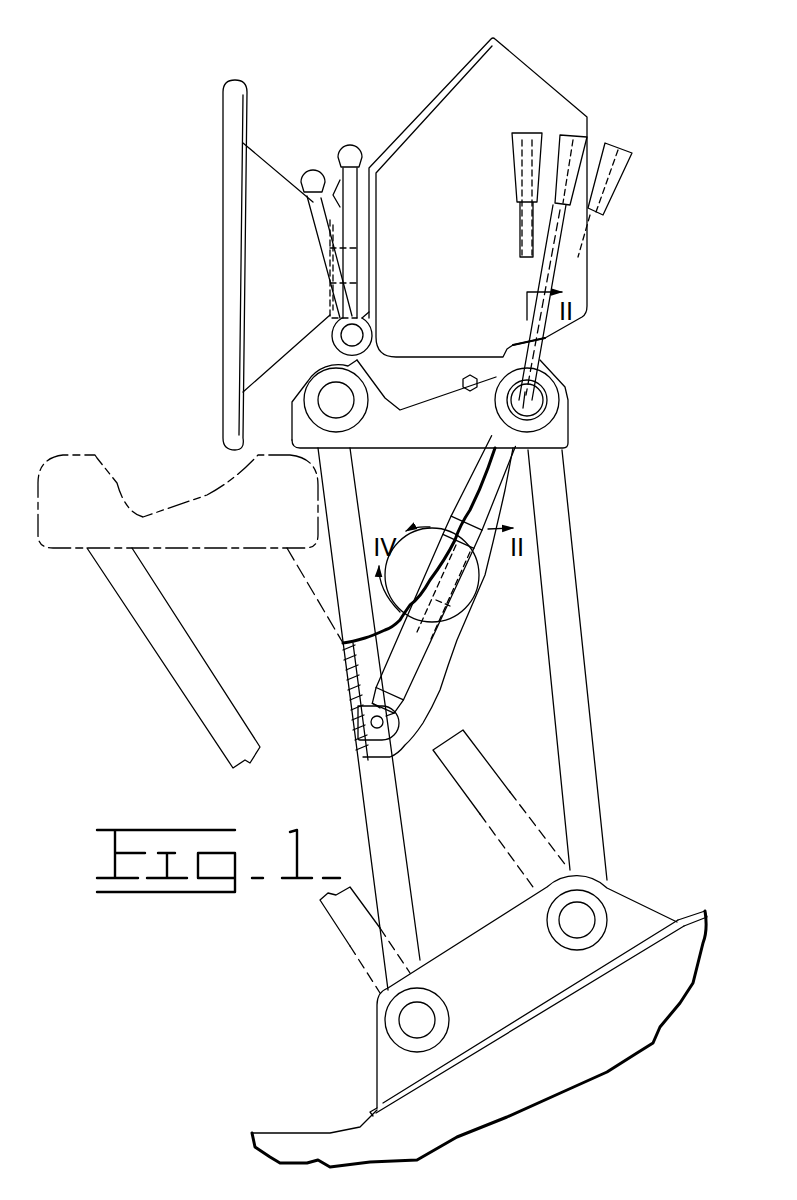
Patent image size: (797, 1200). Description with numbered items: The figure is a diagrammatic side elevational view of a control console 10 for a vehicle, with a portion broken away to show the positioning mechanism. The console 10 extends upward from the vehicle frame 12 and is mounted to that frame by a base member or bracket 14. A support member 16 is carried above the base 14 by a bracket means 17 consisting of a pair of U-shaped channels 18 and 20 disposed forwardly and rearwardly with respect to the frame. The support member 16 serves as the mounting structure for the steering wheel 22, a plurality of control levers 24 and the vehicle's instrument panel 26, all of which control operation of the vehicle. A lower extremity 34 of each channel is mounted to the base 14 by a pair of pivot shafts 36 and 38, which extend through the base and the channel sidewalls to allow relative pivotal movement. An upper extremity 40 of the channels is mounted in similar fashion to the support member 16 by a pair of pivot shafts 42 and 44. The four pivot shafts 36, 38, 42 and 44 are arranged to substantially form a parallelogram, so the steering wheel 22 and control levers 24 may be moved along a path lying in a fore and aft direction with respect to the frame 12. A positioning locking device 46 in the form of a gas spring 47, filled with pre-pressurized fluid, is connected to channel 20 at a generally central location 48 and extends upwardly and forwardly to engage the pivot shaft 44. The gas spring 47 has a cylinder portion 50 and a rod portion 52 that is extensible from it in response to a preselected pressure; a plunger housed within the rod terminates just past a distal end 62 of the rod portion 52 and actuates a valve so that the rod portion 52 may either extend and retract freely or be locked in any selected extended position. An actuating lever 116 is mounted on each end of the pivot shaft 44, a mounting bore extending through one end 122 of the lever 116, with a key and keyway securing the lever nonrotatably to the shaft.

The control console 10 is at (295, 65).
The vehicle frame 12 is at (556, 1053).
The base member or bracket 14 is at (483, 980).
The support member 16 is at (555, 432).
The bracket means 17 is at (586, 622).
The U-shaped channel 18 is at (572, 722).
The U-shaped channel 20 is at (385, 805).
The steering wheel 22 is at (235, 240).
The control levers 24 is at (313, 176).
The instrument panel 26 is at (440, 77).
The lower extremity 34 is at (565, 870).
The pivot shaft 36 is at (428, 1028).
The pivot shaft 38 is at (568, 925).
The upper extremity 40 is at (362, 463).
The pivot shaft 42 is at (332, 395).
The pivot shaft 44 is at (535, 400).
The positioning locking device 46 is at (462, 588).
The gas spring 47 is at (420, 643).
The central location 48 is at (383, 725).
The cylinder portion 50 is at (400, 670).
The rod portion 52 is at (487, 485).
The distal end 62 is at (492, 412).
The actuating lever 116 is at (573, 140).
The end 122 is at (537, 350).